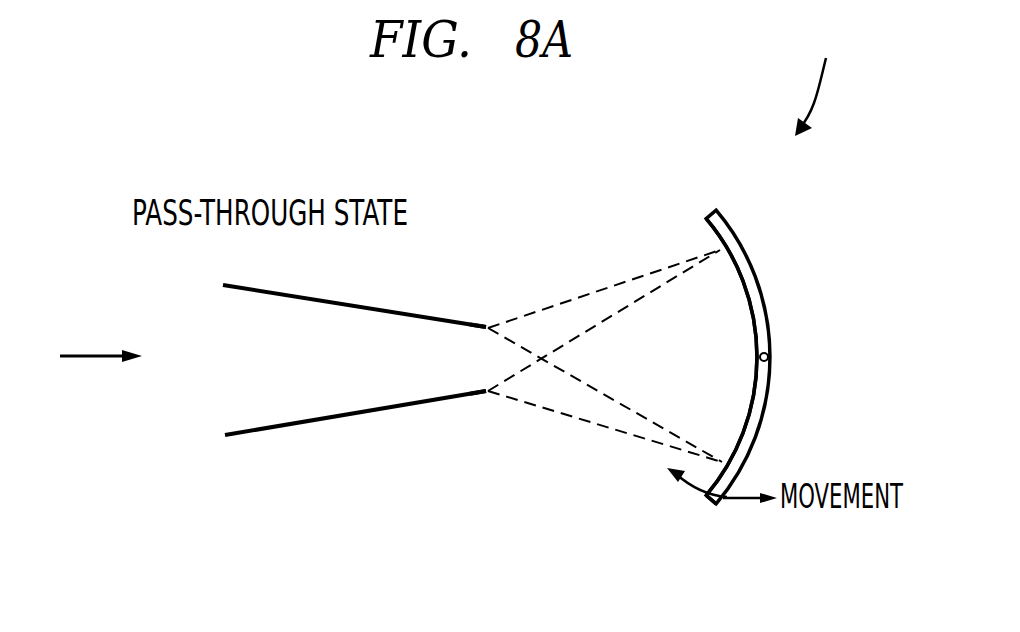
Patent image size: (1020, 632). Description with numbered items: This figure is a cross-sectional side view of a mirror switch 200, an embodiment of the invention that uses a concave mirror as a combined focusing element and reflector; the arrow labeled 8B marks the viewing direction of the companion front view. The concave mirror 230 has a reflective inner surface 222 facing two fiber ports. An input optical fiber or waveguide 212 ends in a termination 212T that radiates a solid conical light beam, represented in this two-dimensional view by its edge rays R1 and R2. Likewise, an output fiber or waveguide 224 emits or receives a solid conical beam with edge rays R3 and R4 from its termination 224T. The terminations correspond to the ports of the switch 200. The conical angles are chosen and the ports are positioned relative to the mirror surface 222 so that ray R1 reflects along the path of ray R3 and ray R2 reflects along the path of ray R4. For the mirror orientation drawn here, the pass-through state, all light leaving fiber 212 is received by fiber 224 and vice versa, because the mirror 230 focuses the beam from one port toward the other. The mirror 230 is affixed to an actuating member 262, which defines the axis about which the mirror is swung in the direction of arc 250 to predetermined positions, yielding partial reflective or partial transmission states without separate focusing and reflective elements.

The mirror switch 200 is at (820, 77).
The input optical fiber or waveguide 212 is at (343, 299).
The termination of input fiber 212T is at (484, 323).
The output optical fiber or waveguide 224 is at (305, 424).
The termination of output fiber 224T is at (482, 398).
The reflective inner surface 222 is at (746, 298).
The concave mirror 230 is at (742, 238).
The arc 250 is at (728, 512).
The actuating member 262 is at (772, 350).
The edge ray R1 is at (653, 272).
The edge ray R2 is at (640, 413).
The edge ray R3 is at (613, 315).
The edge ray R4 is at (592, 422).
The view direction arrow for FIG. 8B is at (80, 354).